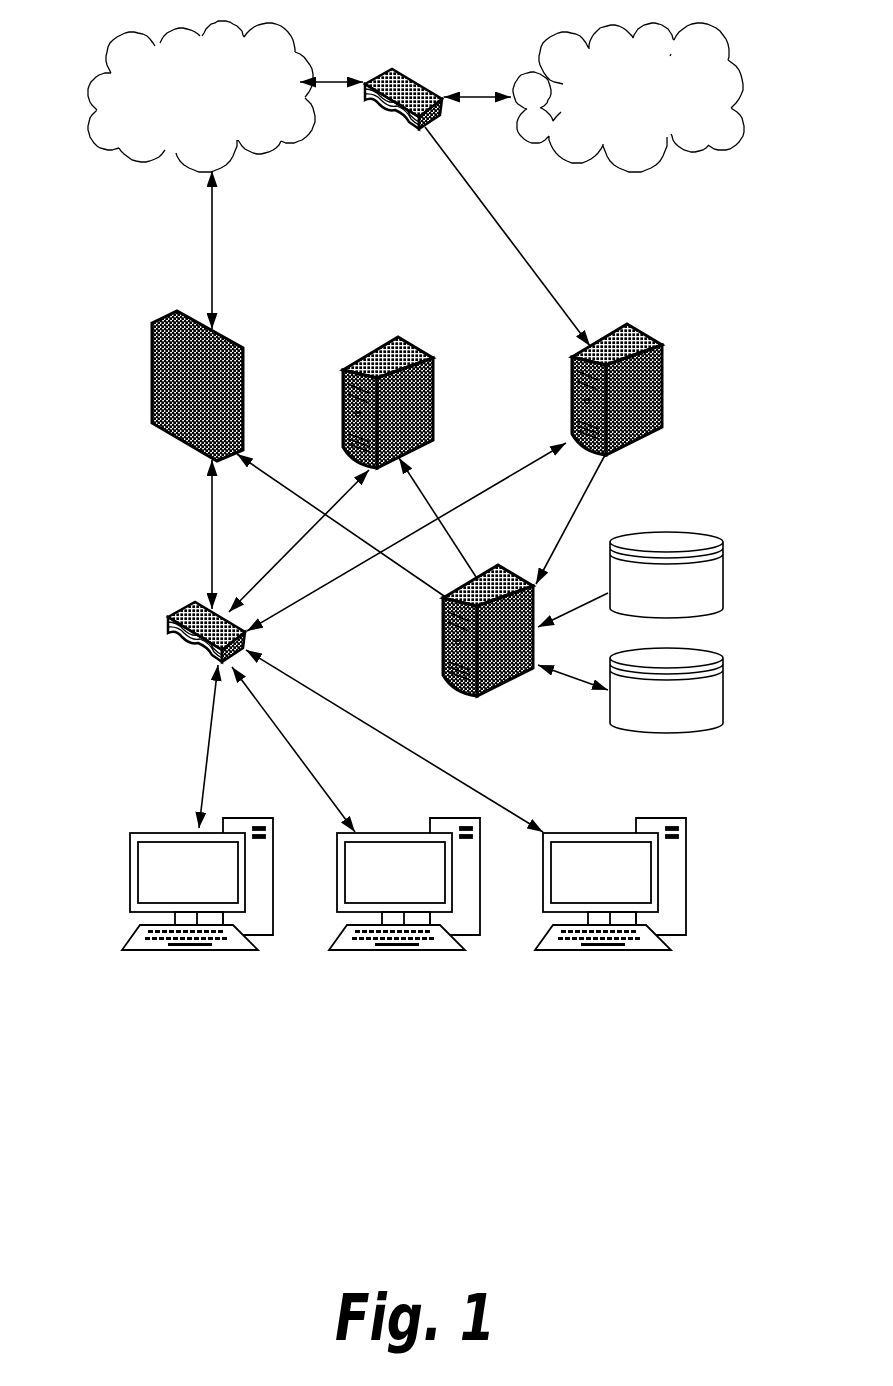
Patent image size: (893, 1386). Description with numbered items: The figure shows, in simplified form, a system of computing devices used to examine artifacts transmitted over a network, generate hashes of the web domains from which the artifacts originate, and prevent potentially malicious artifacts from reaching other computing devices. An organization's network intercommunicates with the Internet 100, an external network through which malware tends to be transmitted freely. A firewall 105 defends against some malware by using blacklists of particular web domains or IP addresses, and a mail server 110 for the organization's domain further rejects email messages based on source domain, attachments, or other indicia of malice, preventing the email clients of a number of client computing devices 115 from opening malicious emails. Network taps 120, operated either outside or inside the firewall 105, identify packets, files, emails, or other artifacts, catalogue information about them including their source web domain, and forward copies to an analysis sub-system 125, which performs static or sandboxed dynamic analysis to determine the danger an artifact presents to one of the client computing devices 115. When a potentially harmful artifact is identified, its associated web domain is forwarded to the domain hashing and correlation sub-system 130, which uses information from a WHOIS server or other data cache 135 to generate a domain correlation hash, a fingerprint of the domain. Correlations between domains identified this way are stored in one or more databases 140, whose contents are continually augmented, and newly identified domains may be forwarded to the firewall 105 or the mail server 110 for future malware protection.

The Internet 100 is at (221, 110).
The firewall 105 is at (152, 325).
The mail server 110 is at (377, 348).
The client computing devices 115 is at (257, 957).
The network taps 120 is at (417, 80).
The analysis sub-system 125 is at (663, 343).
The domain hashing and correlation sub-system 130 is at (507, 682).
The data cache 135 is at (643, 603).
The databases 140 is at (645, 720).